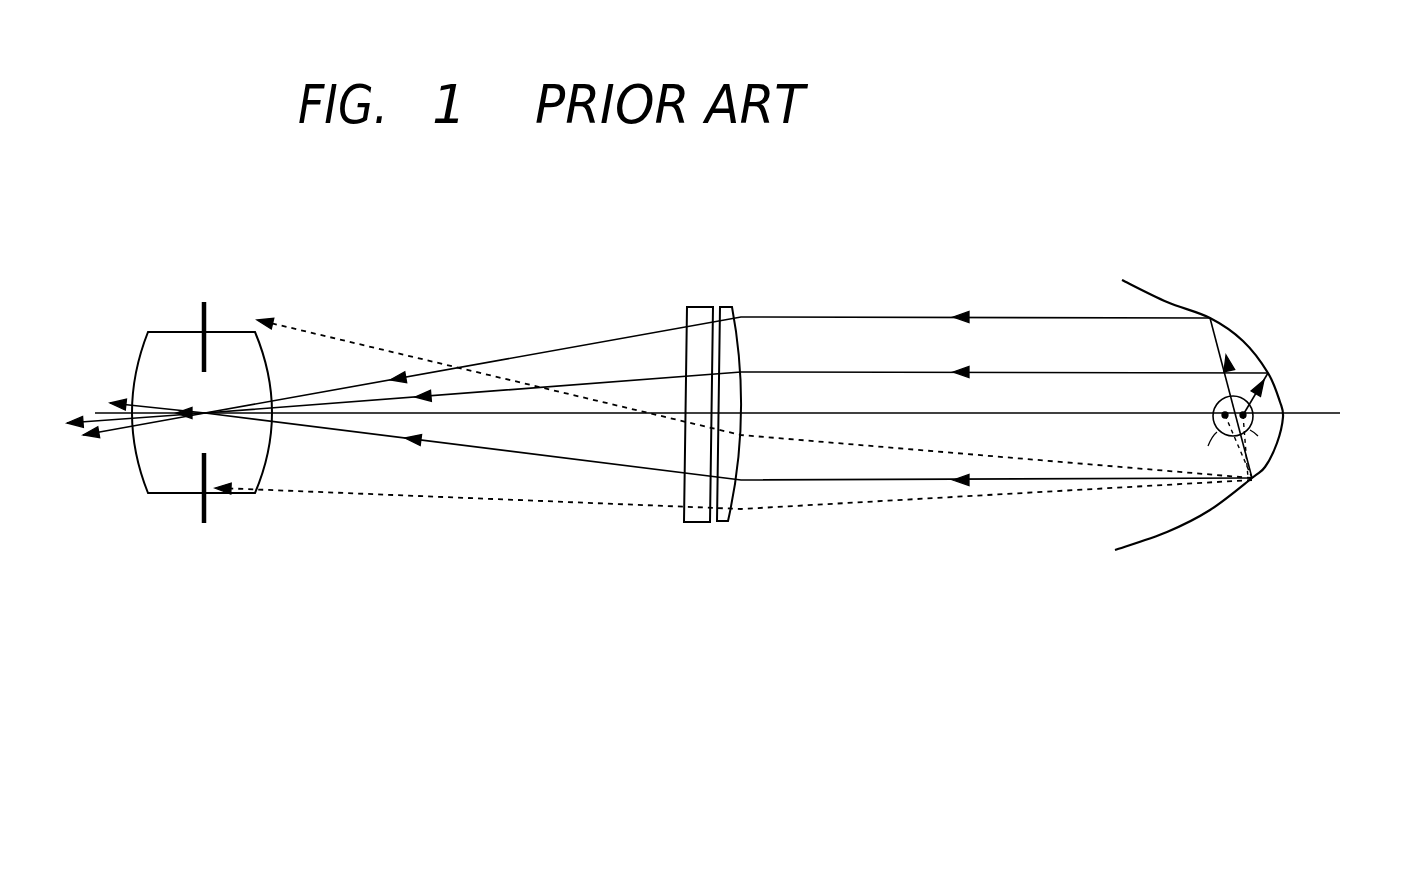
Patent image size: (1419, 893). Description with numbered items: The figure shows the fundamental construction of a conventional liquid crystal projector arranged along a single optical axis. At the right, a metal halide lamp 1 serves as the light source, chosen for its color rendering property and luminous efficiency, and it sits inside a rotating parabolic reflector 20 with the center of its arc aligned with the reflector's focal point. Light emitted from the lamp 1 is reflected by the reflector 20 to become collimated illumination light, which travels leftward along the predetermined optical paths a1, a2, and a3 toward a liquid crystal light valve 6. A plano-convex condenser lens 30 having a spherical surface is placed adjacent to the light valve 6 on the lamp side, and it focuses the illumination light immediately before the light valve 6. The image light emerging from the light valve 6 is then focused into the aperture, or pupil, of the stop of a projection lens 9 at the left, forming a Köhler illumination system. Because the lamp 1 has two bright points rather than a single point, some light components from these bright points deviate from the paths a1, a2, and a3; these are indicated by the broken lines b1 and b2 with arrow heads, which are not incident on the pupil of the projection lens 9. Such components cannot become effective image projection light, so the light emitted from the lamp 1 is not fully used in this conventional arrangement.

The metal halide lamp 1 is at (1212, 410).
The projection lens 9 is at (176, 330).
The liquid crystal light valve 6 is at (699, 306).
The plano-convex condenser lens 30 is at (726, 306).
The rotating parabolic reflector 20 is at (1181, 299).
The predetermined optical path a1 is at (646, 363).
The predetermined optical path a2 is at (667, 386).
The predetermined optical path a3 is at (681, 442).
The deviated light component b1 is at (754, 398).
The deviated light component b2 is at (733, 508).